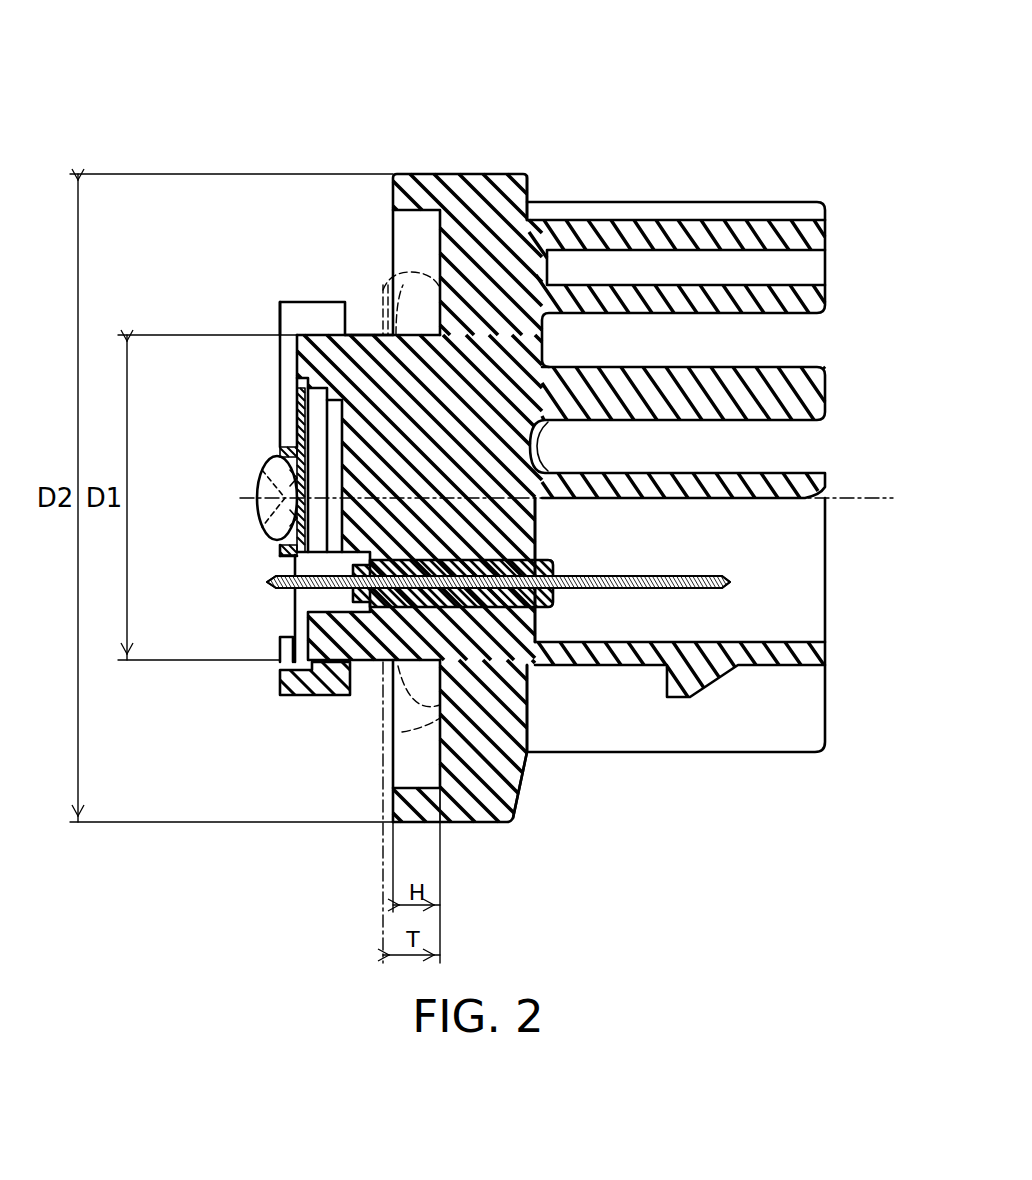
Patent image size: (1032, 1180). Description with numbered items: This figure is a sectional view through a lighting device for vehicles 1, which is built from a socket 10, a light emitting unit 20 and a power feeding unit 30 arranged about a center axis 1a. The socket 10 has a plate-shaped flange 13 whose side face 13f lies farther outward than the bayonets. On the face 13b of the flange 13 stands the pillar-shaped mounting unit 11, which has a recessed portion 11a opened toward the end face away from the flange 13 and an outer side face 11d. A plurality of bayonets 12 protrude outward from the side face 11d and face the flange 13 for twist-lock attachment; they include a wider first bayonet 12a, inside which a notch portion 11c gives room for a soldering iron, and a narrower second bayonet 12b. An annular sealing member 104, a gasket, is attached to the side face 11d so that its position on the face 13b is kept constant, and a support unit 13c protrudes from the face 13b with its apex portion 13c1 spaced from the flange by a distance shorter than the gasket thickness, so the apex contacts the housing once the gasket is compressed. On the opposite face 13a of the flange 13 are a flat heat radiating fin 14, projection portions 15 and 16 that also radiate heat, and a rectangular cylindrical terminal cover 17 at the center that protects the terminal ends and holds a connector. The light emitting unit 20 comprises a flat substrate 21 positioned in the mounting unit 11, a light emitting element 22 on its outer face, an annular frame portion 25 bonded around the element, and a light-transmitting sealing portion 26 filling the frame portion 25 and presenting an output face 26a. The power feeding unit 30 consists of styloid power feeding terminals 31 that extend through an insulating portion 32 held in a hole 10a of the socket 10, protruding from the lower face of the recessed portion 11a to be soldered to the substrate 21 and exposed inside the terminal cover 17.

The lighting device for vehicles 1 is at (843, 86).
The center axis 1a is at (875, 493).
The socket 10 is at (482, 834).
The hole 10a is at (452, 583).
The mounting unit 11 is at (370, 656).
The recessed portion 11a is at (290, 429).
The notch portion 11c is at (287, 659).
The side face 11d is at (366, 331).
The bayonet 12 is at (320, 702).
The first bayonet 12a is at (303, 684).
The second bayonet 12b is at (300, 318).
The flange 13 is at (505, 190).
The face 13a is at (534, 186).
The face 13b is at (437, 222).
The support unit 13c is at (413, 800).
The apex portion 13c1 is at (390, 802).
The side face 13f is at (502, 830).
The heat radiating fin 14 is at (818, 386).
The projection portion 15 is at (767, 760).
The projection portion 16 is at (794, 212).
The terminal cover 17 is at (773, 655).
The light emitting unit 20 is at (232, 496).
The substrate 21 is at (296, 410).
The light emitting element 22 is at (292, 481).
The frame portion 25 is at (290, 551).
The sealing portion 26 is at (290, 524).
The output face 26a is at (262, 506).
The power feeding unit 30 is at (548, 818).
The power feeding terminal 31 is at (644, 585).
The insulating portion 32 is at (492, 602).
The sealing member 104 is at (452, 242).